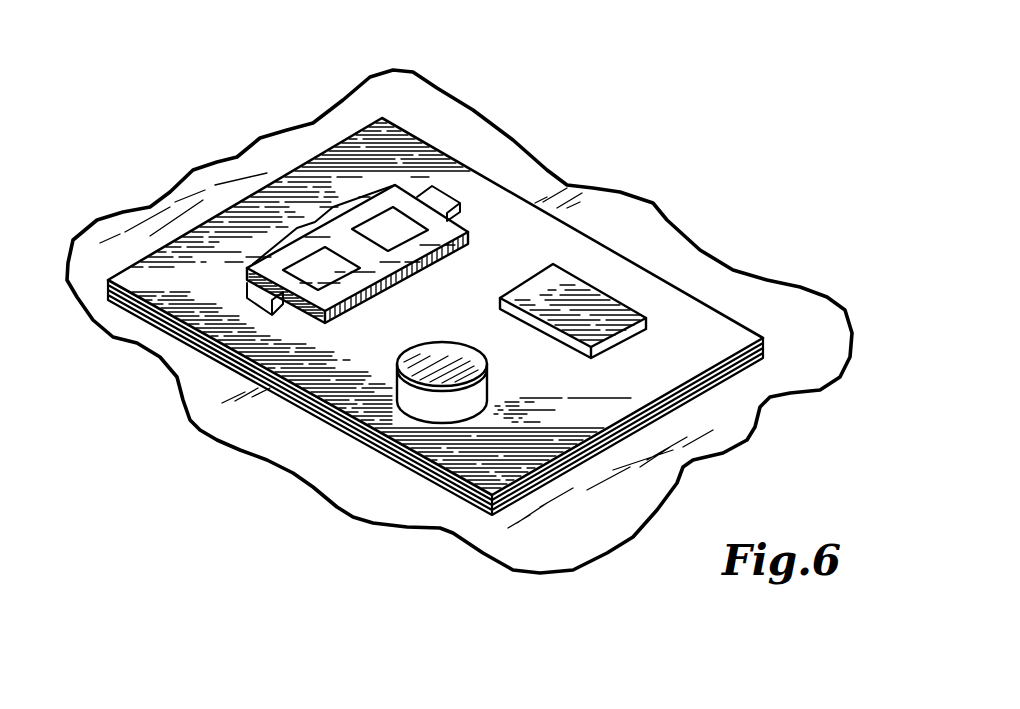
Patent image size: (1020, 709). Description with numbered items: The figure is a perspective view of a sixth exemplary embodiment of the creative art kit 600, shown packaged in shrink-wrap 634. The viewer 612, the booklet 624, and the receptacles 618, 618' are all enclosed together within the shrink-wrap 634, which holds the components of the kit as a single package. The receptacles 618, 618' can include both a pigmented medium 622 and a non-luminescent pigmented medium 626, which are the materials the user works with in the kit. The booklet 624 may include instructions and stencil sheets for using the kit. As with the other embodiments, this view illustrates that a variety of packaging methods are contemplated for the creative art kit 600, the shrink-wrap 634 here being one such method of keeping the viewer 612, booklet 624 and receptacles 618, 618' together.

The creative art kit 600 is at (705, 110).
The viewer 612 is at (395, 197).
The receptacle 618 is at (548, 310).
The receptacle 618' is at (487, 382).
The pigmented medium 622 is at (475, 440).
The booklet 624 is at (722, 375).
The non-luminescent pigmented medium 626 is at (673, 320).
The shrink-wrap 634 is at (177, 212).